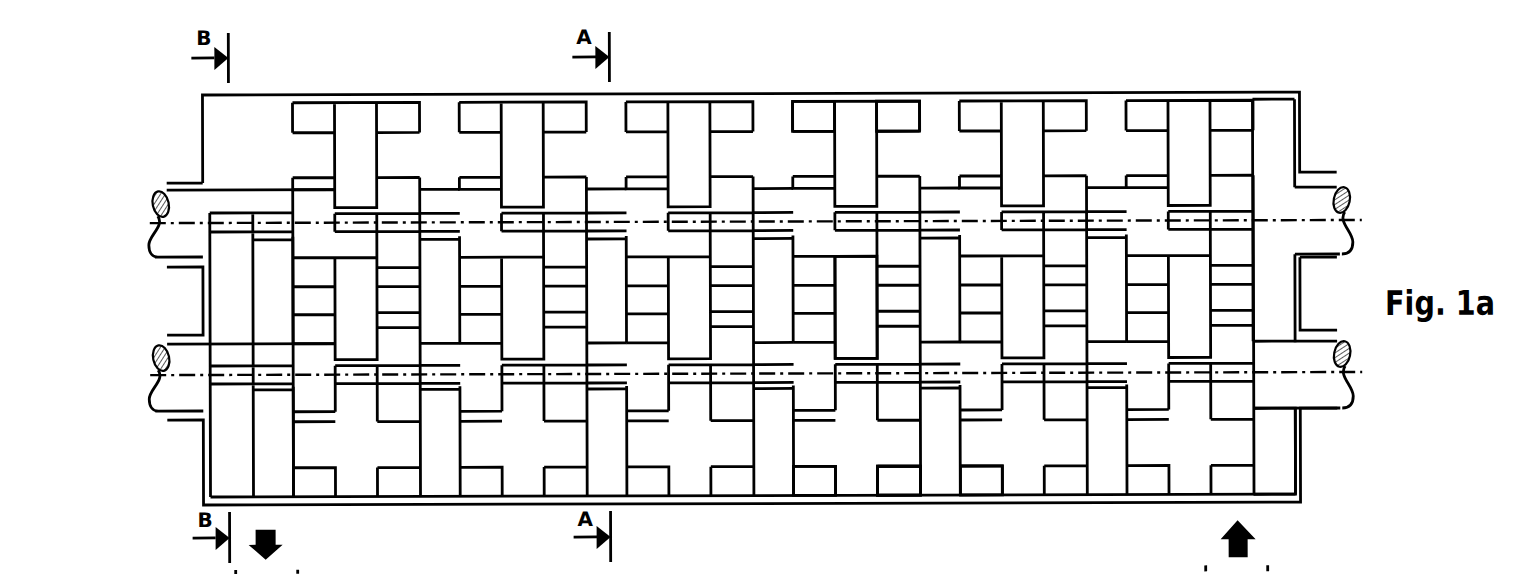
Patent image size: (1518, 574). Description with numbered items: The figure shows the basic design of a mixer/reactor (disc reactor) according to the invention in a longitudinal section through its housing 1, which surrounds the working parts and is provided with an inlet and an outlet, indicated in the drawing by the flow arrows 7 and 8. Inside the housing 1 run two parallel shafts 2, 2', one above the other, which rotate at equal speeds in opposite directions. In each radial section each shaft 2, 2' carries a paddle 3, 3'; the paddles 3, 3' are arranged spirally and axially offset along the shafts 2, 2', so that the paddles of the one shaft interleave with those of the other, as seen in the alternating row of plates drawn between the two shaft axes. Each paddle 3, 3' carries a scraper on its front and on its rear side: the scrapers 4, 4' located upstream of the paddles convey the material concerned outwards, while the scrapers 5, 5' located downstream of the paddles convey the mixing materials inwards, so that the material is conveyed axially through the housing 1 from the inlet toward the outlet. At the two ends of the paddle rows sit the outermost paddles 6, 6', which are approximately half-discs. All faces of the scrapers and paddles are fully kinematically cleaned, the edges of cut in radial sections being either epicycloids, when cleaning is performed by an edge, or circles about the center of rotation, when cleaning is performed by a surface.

The housing 1 is at (1310, 573).
The shaft 2 is at (780, 392).
The shaft 2' is at (777, 210).
The paddle 3 is at (913, 410).
The paddle 3' is at (731, 265).
The scraper 4 is at (886, 514).
The scraper 4' is at (800, 82).
The scraper 5 is at (990, 514).
The scraper 5' is at (902, 82).
The outermost paddle 6 is at (1332, 451).
The outermost paddle 6' is at (1323, 209).
The inlet flow arrow 7 is at (277, 572).
The outlet flow arrow 8 is at (1227, 573).